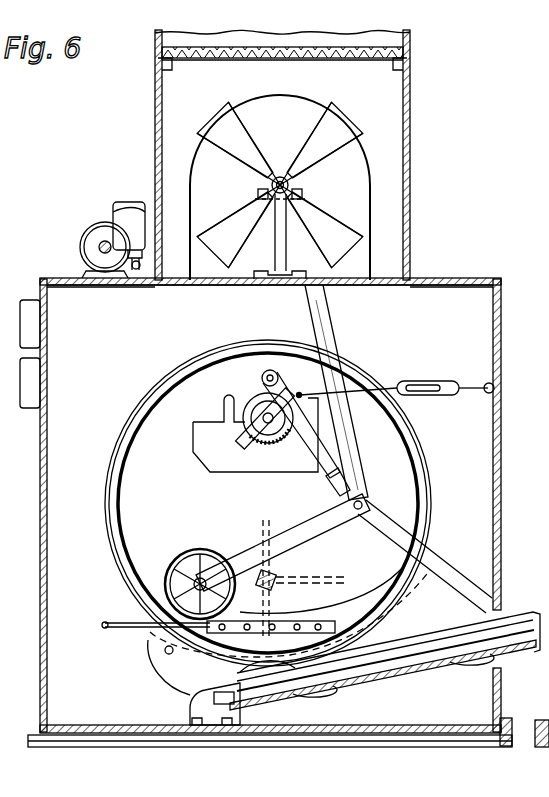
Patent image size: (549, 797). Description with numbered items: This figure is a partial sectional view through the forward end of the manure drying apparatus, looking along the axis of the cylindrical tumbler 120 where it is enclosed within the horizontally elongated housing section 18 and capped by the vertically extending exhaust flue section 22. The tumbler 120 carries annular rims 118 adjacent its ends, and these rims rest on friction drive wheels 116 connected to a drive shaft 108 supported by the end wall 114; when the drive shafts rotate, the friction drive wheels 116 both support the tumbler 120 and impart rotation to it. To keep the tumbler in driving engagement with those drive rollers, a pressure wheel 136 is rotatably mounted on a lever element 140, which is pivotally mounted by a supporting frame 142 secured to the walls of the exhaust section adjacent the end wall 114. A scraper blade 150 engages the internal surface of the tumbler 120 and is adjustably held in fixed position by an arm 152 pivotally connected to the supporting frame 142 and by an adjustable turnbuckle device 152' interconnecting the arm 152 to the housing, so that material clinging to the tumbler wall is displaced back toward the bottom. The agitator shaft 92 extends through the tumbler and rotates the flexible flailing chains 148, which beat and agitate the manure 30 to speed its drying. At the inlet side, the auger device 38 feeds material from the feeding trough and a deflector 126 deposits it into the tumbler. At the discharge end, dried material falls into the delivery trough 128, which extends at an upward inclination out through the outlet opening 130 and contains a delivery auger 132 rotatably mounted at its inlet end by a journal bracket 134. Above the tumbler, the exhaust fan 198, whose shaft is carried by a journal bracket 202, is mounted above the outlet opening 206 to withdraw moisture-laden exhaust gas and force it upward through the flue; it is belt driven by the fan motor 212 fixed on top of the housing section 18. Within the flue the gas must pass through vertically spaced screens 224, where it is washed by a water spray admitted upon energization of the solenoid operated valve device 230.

The housing section 18 is at (33, 490).
The exhaust flue section 22 is at (414, 44).
The manure 30 is at (338, 617).
The auger device 38 is at (254, 402).
The agitator shaft 92 is at (282, 578).
The drive shaft 108 is at (165, 651).
The end wall 114 is at (458, 302).
The friction drive wheels 116 is at (163, 659).
The annular rims 118 is at (112, 484).
The cylindrical tumbler 120 is at (128, 410).
The deflector 126 is at (203, 456).
The delivery trough 128 is at (332, 690).
The outlet opening 130 is at (502, 604).
The delivery auger 132 is at (424, 660).
The journal bracket 134 is at (190, 708).
The pressure wheel 136 is at (181, 556).
The lever element 140 is at (300, 526).
The supporting frame 142 is at (400, 518).
The flailing chains 148 is at (262, 550).
The scraper blade 150 is at (273, 369).
The arm 152 is at (272, 429).
The adjustable turnbuckle device 152' is at (397, 375).
The exhaust fan 198 is at (330, 137).
The journal bracket 202 is at (290, 240).
The outlet opening 206 is at (380, 283).
The fan motor 212 is at (92, 248).
The screens 224 is at (272, 54).
The solenoid operated valve device 230 is at (125, 216).